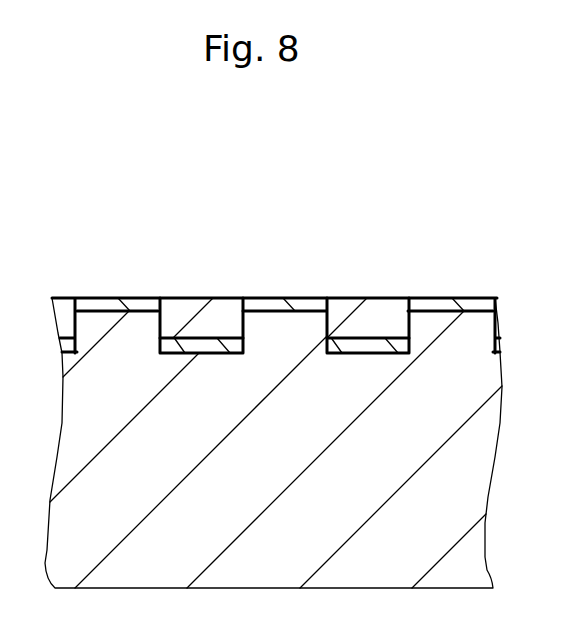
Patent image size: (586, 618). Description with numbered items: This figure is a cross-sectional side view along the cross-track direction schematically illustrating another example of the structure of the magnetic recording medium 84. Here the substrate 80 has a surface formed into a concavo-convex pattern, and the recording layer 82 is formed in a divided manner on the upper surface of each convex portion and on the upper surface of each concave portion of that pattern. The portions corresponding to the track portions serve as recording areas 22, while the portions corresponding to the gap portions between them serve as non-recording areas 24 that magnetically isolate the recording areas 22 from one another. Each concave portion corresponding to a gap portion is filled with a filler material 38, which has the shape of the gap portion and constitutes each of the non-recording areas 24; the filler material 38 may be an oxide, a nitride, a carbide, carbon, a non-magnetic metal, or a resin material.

The substrate 80 is at (498, 447).
The recording area 22 is at (158, 290).
The non-recording area 24 is at (243, 290).
The filler material 38 is at (386, 303).
The recording layer 82 is at (358, 347).
The magnetic recording medium 84 is at (284, 169).